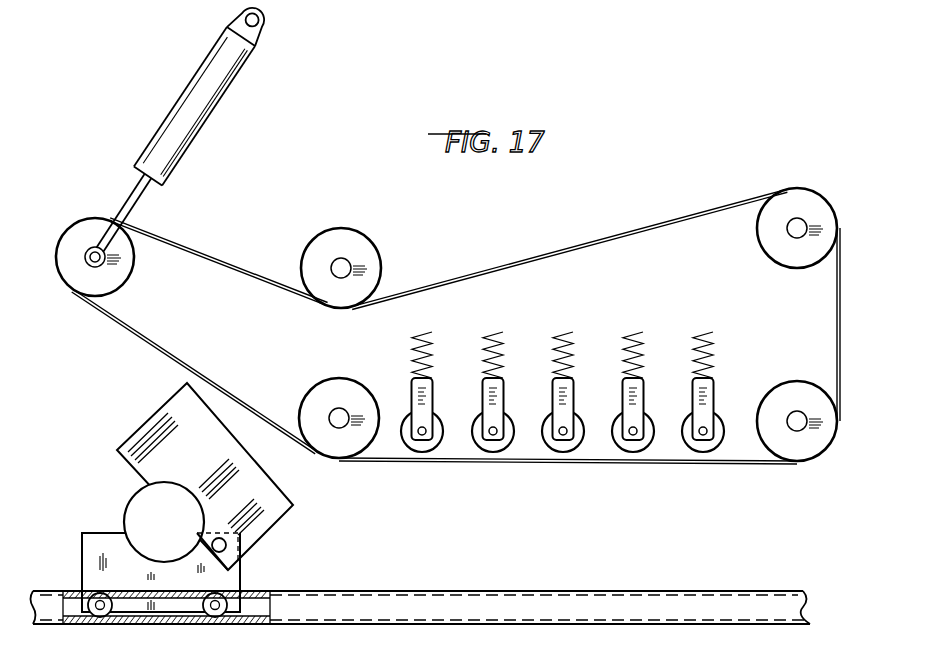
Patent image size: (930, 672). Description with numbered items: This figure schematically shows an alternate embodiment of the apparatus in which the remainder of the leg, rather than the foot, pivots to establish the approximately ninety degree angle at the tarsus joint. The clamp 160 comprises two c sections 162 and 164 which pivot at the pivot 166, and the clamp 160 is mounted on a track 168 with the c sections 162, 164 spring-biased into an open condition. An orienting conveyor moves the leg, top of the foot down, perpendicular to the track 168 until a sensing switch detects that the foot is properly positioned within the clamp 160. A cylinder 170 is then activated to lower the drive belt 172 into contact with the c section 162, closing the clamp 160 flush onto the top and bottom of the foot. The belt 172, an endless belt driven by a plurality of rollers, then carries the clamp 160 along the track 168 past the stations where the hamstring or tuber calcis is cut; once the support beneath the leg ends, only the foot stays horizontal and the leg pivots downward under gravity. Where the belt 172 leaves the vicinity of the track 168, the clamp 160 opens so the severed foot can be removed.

The clamp 160 is at (78, 562).
The c section 162 is at (272, 510).
The c section 164 is at (233, 574).
The pivot 166 is at (212, 540).
The track 168 is at (268, 606).
The cylinder 170 is at (220, 85).
The drive belt 172 is at (132, 328).